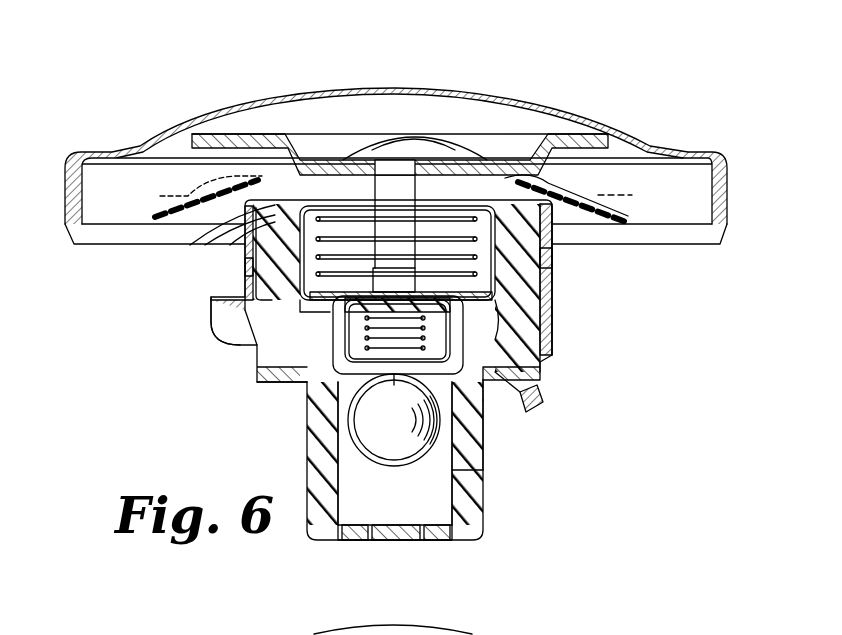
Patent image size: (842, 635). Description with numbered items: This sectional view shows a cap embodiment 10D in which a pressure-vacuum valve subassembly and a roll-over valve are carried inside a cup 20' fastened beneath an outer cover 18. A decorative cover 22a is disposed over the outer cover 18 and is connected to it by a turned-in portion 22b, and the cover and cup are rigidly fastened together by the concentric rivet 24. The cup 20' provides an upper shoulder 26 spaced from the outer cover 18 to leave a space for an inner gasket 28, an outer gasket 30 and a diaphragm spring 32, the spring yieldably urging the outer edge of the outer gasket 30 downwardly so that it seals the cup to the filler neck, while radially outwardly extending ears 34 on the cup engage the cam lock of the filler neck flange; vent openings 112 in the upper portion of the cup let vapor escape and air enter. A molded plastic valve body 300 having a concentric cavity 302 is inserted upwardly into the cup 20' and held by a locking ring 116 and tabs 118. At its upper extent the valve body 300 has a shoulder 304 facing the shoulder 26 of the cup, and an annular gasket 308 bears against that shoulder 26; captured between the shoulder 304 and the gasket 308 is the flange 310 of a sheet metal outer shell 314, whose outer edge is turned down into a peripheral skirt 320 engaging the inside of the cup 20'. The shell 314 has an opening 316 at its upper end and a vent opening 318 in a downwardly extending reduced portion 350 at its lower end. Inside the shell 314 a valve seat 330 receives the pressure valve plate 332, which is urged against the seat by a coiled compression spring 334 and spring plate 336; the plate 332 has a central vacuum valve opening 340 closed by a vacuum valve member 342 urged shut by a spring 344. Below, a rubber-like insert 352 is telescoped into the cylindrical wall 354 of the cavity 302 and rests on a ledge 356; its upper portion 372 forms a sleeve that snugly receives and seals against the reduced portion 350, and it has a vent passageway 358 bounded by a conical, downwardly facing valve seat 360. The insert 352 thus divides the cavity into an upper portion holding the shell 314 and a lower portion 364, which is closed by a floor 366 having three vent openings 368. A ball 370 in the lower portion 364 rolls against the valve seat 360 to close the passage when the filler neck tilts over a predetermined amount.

The cap assembly 10D is at (572, 60).
The outer cover 18 is at (84, 192).
The decorative cover 22a is at (372, 96).
The turned-in portion 22b is at (88, 246).
The concentric rivet 24 is at (393, 143).
The upper shoulder 26 is at (505, 183).
The inner gasket 28 is at (510, 188).
The outer gasket 30 is at (624, 212).
The diaphragm spring 32 is at (585, 187).
The vent openings 112 is at (290, 178).
The locking ring 116 is at (276, 384).
The tabs 118 is at (537, 412).
The cup 20' is at (573, 264).
The molded plastic valve body 300 is at (540, 362).
The concentric cavity 302 is at (546, 350).
The shoulder 304 is at (553, 266).
The annular gasket 308 is at (193, 224).
The flange 310 is at (246, 266).
The sheet metal outer shell 314 is at (238, 340).
The upper opening 316 is at (345, 210).
The lower vent opening 318 is at (482, 480).
The peripheral skirt 320 is at (238, 233).
The valve seat 330 is at (292, 322).
The pressure valve plate 332 is at (533, 324).
The coiled compression spring 334 is at (457, 205).
The spring plate 336 is at (532, 306).
The central opening 340 is at (400, 268).
The vacuum valve member 342 is at (522, 402).
The spring 344 is at (484, 442).
The reduced portion 350 is at (308, 400).
The rubber-like insert 352 is at (490, 360).
The cylindrical wall 354 is at (364, 438).
The ledge 356 is at (482, 432).
The vent passageway 358 is at (393, 368).
The conical valve seat 360 is at (394, 420).
The lower portion 364 is at (440, 478).
The floor 366 is at (412, 542).
The vent openings 368 is at (364, 542).
The ball 370 is at (417, 456).
The upper portion of insert 372 is at (292, 364).
The ears 34 is at (218, 314).